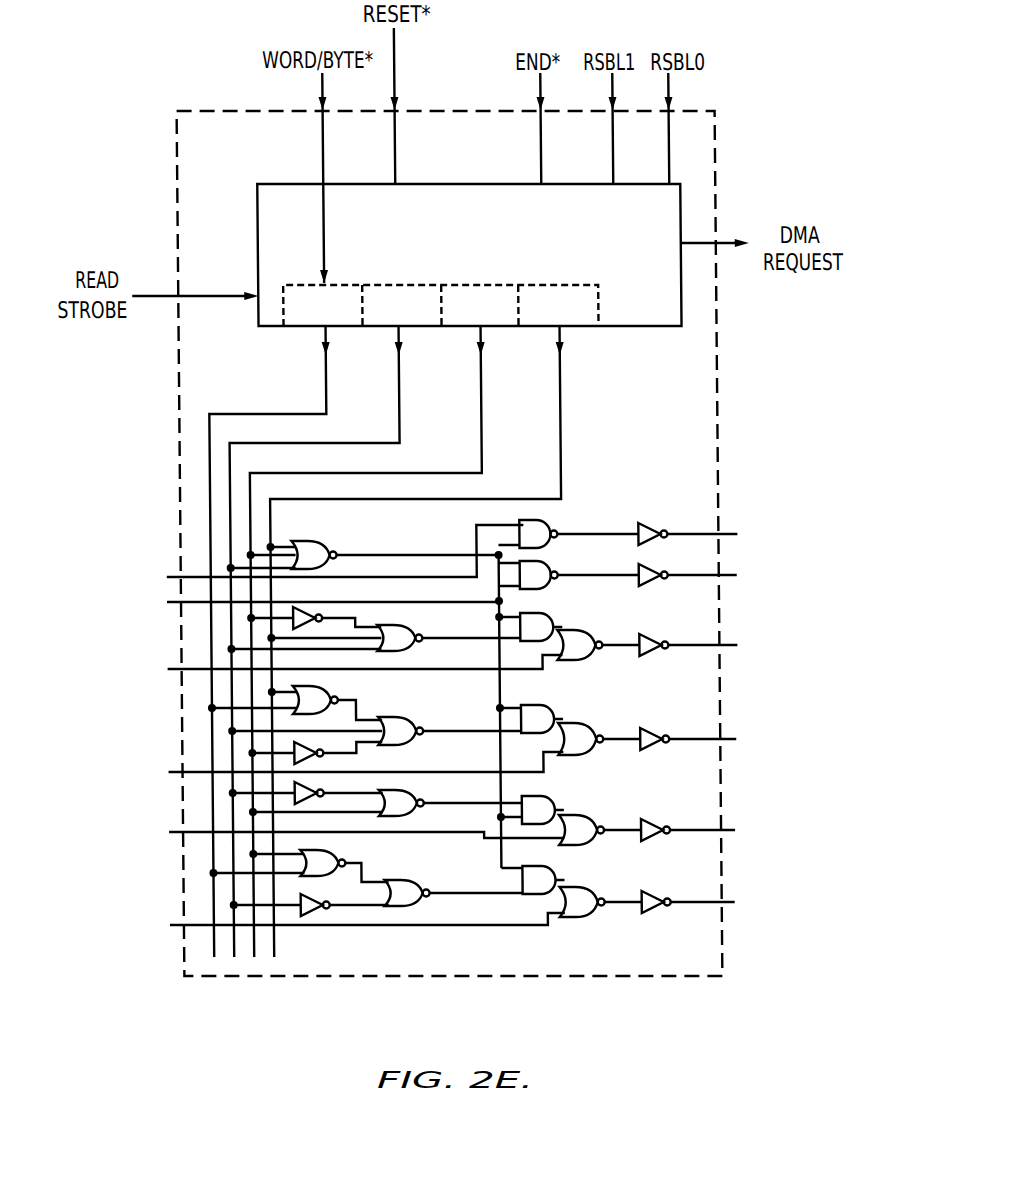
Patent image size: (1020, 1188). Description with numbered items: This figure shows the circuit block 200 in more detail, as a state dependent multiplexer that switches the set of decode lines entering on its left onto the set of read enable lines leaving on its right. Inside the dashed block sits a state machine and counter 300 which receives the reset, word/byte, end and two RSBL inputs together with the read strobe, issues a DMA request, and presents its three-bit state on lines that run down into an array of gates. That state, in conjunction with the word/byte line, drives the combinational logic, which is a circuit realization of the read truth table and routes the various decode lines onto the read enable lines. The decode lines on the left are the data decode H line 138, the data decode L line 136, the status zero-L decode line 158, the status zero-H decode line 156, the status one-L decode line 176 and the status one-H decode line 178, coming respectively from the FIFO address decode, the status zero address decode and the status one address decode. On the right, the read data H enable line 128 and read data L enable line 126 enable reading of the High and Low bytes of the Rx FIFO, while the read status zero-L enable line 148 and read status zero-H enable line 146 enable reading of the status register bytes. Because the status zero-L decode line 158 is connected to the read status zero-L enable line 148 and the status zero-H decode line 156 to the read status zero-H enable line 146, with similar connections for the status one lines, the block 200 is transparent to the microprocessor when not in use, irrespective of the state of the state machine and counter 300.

The circuit block 200 is at (672, 977).
The state machine and counter 300 is at (634, 327).
The data decode H line 138 is at (169, 576).
The data decode L line 136 is at (171, 606).
The status 0L decode line 158 is at (171, 672).
The status 0H decode line 156 is at (170, 771).
The status 1H decode line 178 is at (170, 835).
The status 1L decode line 176 is at (170, 928).
The read data H enable line 128 is at (733, 531).
The read data L enable line 126 is at (729, 577).
The read status 0L enable line 148 is at (727, 648).
The read status 0H enable line 146 is at (731, 738).